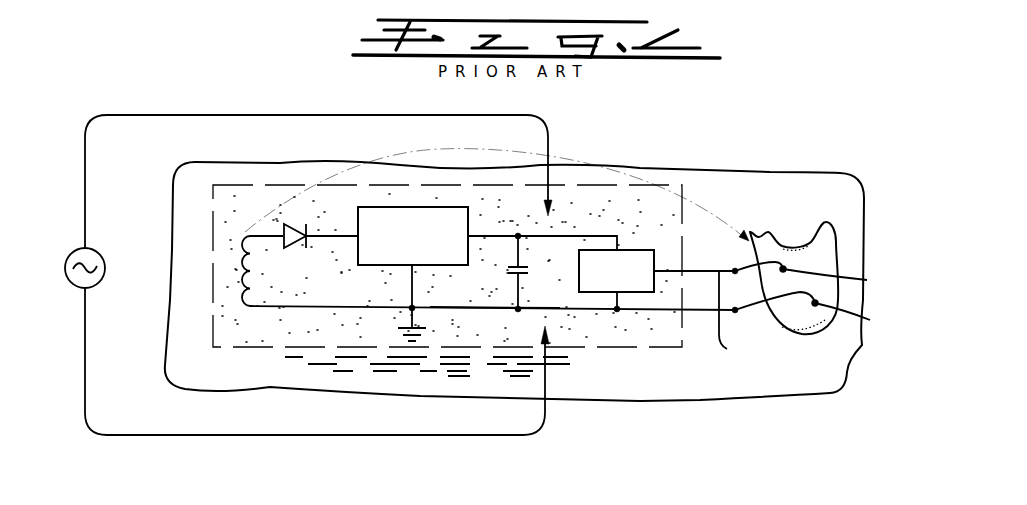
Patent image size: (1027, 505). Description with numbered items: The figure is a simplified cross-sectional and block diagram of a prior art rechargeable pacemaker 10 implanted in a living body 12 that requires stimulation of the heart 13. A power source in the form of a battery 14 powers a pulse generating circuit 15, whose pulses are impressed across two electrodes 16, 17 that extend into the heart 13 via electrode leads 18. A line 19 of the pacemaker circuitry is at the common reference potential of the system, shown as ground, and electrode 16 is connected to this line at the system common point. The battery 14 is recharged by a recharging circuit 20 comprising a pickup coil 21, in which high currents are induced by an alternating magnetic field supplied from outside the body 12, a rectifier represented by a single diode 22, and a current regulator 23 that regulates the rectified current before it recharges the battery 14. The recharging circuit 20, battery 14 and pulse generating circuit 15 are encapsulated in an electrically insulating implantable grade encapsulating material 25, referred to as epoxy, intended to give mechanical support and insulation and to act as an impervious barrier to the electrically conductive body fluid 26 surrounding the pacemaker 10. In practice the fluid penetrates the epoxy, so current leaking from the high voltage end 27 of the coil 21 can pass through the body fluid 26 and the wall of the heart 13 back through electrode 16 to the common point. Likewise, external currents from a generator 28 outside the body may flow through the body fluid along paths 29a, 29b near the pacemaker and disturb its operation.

The pacemaker 10 is at (593, 199).
The living body 12 is at (736, 382).
The heart 13 is at (836, 249).
The battery 14 is at (528, 273).
The pulse generating circuit 15 is at (627, 250).
The electrode 16 is at (870, 320).
The electrode 17 is at (867, 280).
The electrode leads 18 is at (705, 312).
The line 19 is at (496, 312).
The recharging circuit 20 is at (323, 262).
The pickup coil 21 is at (240, 241).
The diode 22 is at (292, 223).
The current regulator 23 is at (412, 206).
The encapsulating material 25 is at (657, 345).
The body fluid 26 is at (413, 360).
The high voltage end of the coil 27 is at (707, 205).
The generator 28 is at (78, 250).
The current path 29a is at (297, 112).
The current path 29b is at (488, 436).